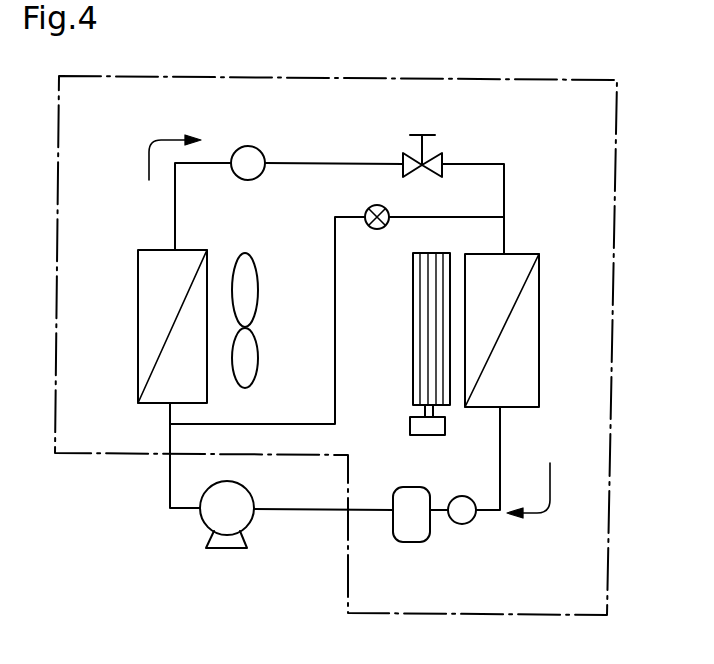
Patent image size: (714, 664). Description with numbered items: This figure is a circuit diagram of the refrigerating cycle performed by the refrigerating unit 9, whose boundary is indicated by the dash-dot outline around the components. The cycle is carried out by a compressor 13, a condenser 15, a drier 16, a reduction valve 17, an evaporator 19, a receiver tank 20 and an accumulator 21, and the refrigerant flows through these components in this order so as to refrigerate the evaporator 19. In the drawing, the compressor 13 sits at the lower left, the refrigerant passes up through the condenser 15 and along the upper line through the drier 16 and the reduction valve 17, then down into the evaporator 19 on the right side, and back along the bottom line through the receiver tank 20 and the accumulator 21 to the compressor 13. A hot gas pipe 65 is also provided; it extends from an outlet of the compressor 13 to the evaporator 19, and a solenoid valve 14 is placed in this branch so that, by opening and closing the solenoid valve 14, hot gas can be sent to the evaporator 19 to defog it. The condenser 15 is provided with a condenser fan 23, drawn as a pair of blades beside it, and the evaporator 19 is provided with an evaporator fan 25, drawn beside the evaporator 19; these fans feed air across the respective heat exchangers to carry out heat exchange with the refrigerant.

The refrigerating unit 9 is at (604, 78).
The compressor 13 is at (203, 518).
The solenoid valve 14 is at (372, 207).
The condenser 15 is at (138, 365).
The drier 16 is at (256, 143).
The reduction valve 17 is at (436, 154).
The evaporator 19 is at (540, 392).
The receiver tank 20 is at (468, 525).
The accumulator 21 is at (394, 532).
The condenser fan 23 is at (257, 326).
The evaporator fan 25 is at (413, 292).
The hot gas pipe 65 is at (436, 190).